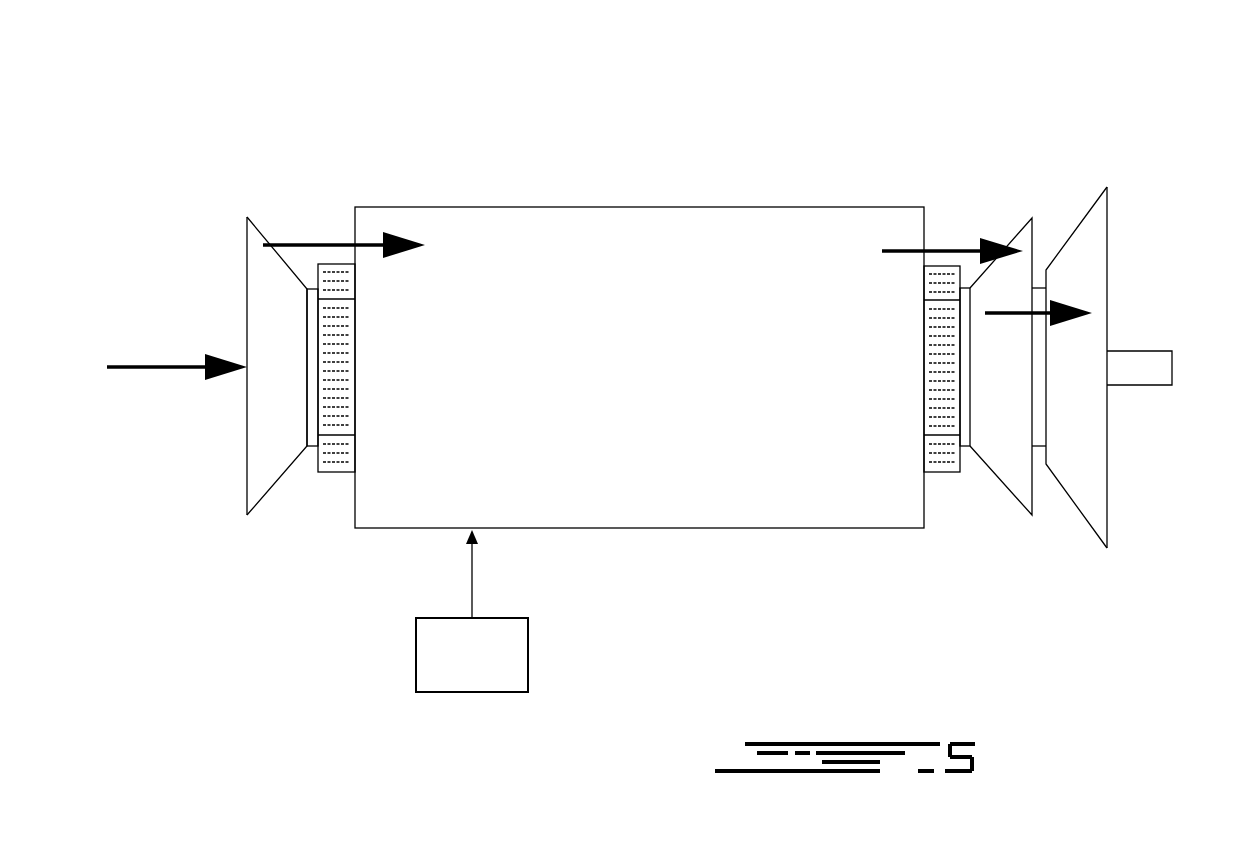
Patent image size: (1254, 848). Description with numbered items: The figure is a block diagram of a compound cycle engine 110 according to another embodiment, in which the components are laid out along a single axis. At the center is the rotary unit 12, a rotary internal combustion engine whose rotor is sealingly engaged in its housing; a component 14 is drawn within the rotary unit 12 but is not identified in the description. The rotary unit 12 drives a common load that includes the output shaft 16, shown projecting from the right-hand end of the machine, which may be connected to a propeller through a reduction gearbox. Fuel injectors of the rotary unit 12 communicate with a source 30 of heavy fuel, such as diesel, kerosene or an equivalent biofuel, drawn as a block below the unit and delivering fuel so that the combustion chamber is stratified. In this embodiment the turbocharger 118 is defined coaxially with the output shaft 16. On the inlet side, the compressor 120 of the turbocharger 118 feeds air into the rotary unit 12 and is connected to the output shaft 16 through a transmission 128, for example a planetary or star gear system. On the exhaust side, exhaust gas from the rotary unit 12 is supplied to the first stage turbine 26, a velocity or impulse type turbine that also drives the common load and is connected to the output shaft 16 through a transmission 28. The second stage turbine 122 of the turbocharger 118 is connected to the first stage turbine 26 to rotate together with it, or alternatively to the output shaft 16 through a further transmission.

The compound cycle engine 110 is at (280, 125).
The rotary unit 12 is at (514, 240).
The flow passage 14 is at (587, 238).
The output shaft 16 is at (1148, 365).
The first stage turbine 26 is at (1000, 450).
The transmission 28 is at (933, 305).
The source of heavy fuel 30 is at (470, 675).
The turbocharger 118 is at (240, 228).
The compressor 120 is at (275, 440).
The second stage turbine 122 is at (1073, 457).
The transmission 128 is at (337, 425).